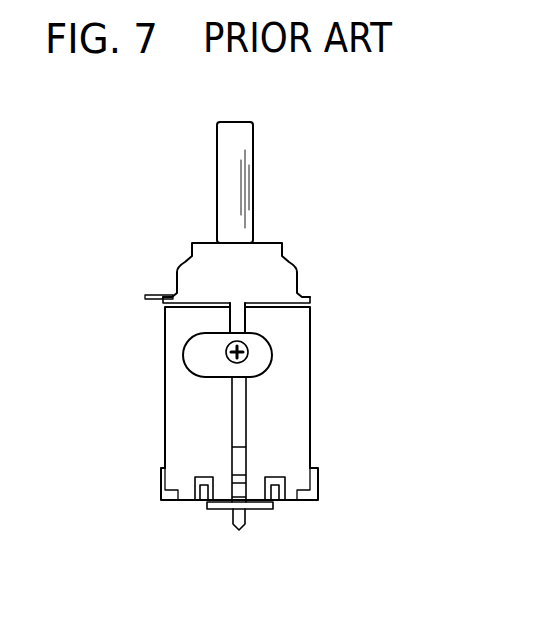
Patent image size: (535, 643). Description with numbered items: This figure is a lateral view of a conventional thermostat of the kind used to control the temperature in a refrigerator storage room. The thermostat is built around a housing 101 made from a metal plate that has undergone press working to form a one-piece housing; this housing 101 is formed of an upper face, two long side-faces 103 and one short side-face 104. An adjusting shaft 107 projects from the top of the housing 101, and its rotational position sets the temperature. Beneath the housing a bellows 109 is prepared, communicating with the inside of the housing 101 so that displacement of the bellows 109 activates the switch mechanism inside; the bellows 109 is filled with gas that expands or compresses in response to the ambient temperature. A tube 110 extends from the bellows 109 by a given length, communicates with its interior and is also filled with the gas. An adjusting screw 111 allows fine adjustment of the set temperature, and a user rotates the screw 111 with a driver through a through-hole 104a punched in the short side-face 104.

The housing 101 is at (332, 405).
The long side-face 103 is at (312, 352).
The short side-face 104 is at (283, 416).
The through-hole 104a is at (200, 355).
The adjusting shaft 107 is at (250, 125).
The bellows 109 is at (217, 508).
The tube 110 is at (238, 528).
The adjusting screw 111 is at (228, 343).